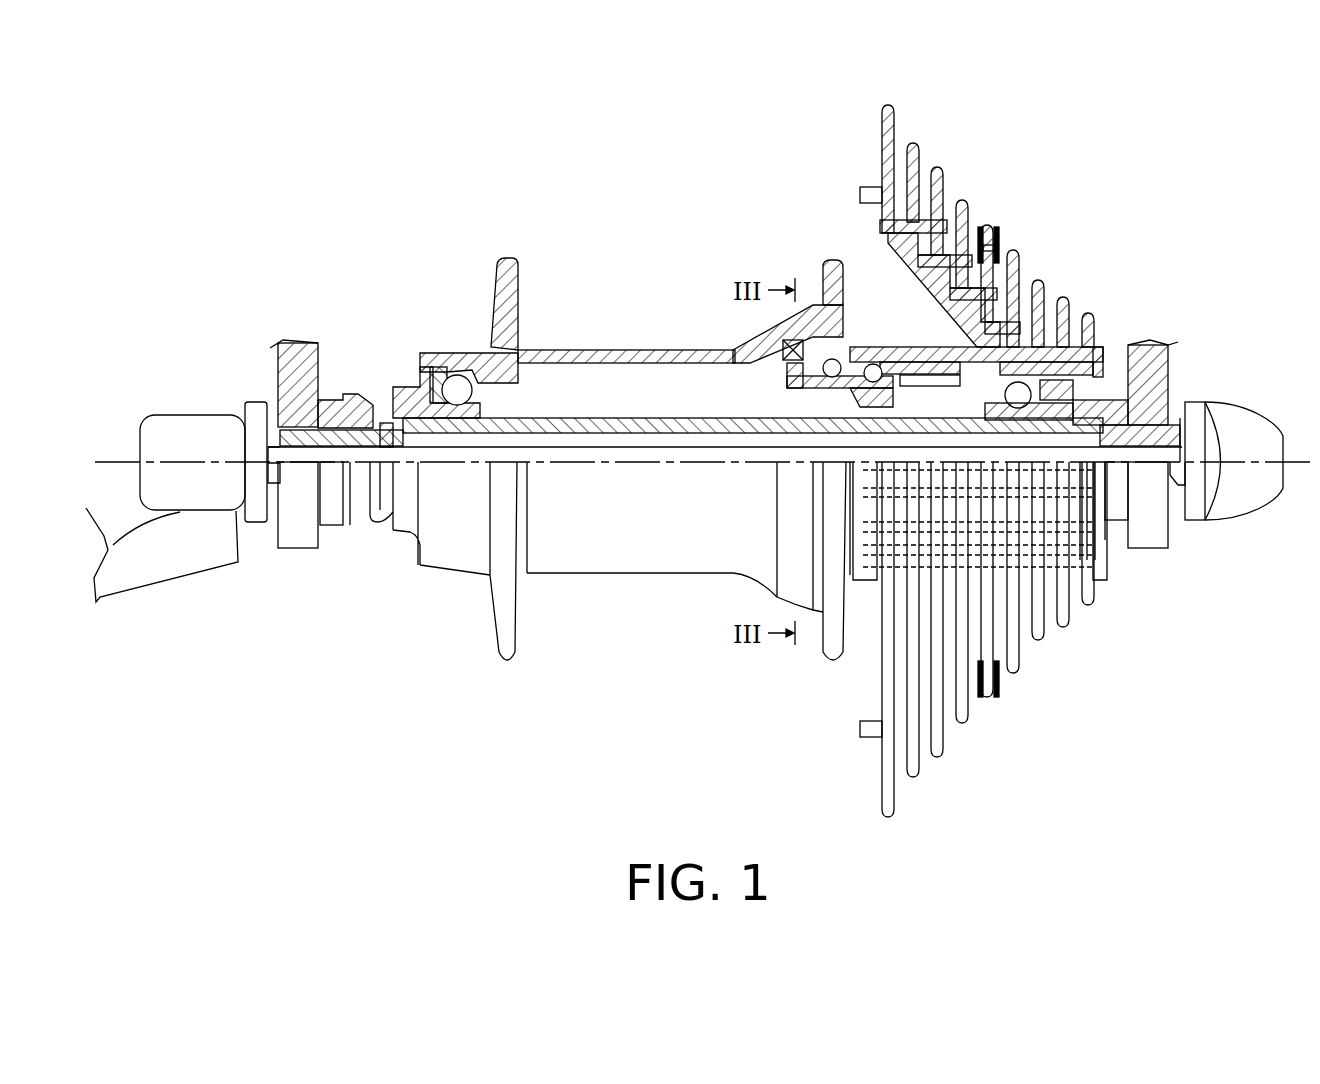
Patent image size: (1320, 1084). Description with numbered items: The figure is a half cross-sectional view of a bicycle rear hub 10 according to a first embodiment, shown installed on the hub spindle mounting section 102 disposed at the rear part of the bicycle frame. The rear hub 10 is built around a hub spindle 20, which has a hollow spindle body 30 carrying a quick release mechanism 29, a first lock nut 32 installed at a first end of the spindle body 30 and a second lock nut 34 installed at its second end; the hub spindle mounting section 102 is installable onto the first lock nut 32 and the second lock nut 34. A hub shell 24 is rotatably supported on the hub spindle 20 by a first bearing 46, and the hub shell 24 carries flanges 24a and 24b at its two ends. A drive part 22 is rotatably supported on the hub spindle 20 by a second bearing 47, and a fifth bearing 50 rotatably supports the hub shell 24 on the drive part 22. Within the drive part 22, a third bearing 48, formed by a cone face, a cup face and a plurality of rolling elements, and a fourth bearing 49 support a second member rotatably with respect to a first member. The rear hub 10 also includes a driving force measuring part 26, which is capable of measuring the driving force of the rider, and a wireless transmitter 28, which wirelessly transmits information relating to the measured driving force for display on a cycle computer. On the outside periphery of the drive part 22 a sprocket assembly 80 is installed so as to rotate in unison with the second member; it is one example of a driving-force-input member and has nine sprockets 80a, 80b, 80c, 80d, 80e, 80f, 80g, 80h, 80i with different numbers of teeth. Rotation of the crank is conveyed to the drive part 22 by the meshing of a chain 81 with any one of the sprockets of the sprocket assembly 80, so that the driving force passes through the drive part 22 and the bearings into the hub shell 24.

The bicycle rear hub 10 is at (625, 258).
The hub spindle 20 is at (618, 398).
The drive part 22 is at (920, 348).
The hub shell 24 is at (682, 336).
The left hub flange 24a is at (505, 258).
The right hub flange 24b is at (838, 262).
The driving force measuring part 26 is at (772, 325).
The wireless transmitter 28 is at (487, 350).
The quick release mechanism 29 is at (205, 425).
The spindle body 30 is at (652, 406).
The first lock nut 32 is at (345, 400).
The second lock nut 34 is at (1105, 395).
The first bearing 46 is at (437, 367).
The second bearing 47 is at (1042, 345).
The third bearing 48 is at (850, 355).
The fourth bearing 49 is at (1003, 345).
The fifth bearing 50 is at (806, 390).
The sprocket assembly 80 is at (1032, 226).
The sprocket 80a is at (1096, 600).
The sprocket 80b is at (1071, 622).
The sprocket 80c is at (1046, 636).
The sprocket 80d is at (1021, 668).
The sprocket 80e is at (995, 692).
The sprocket 80f is at (970, 718).
The sprocket 80g is at (945, 752).
The sprocket 80h is at (921, 772).
The sprocket 80i is at (896, 812).
The chain 81 is at (998, 225).
The hub spindle mounting section 102 is at (292, 345).